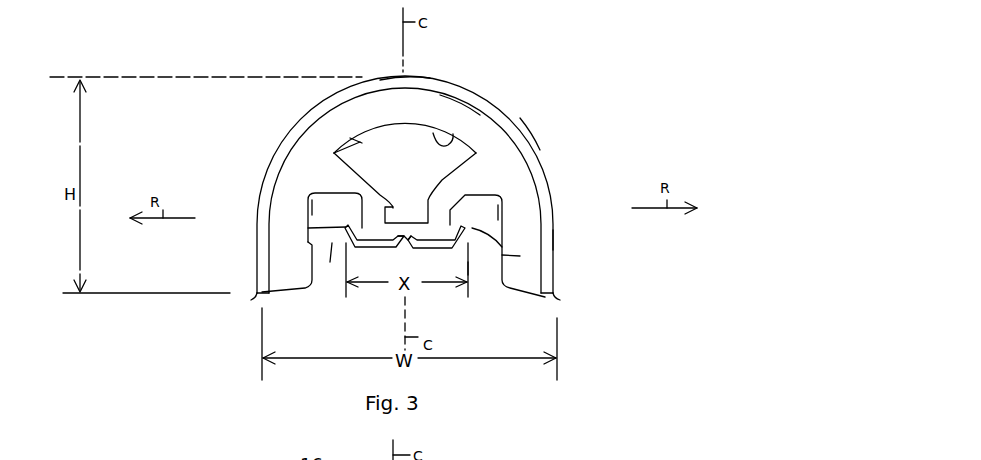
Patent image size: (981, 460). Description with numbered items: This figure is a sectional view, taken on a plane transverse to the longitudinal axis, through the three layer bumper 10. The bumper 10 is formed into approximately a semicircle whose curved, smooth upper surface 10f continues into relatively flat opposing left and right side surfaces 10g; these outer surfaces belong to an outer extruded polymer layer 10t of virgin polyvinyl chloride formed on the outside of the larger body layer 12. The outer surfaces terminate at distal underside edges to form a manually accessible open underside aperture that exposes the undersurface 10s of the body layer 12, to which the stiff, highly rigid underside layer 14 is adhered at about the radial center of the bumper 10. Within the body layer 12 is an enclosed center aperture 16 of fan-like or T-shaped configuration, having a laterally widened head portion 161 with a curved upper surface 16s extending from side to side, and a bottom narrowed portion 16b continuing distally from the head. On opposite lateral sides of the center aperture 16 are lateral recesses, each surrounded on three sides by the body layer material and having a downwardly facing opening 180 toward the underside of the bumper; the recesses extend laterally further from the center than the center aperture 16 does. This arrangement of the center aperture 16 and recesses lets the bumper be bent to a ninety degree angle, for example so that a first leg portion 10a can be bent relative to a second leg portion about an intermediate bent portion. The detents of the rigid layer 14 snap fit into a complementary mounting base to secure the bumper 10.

The bumper 10 is at (512, 64).
The outer extruded polymer layer 10t is at (450, 83).
The body layer 12 is at (460, 115).
The upper outer surface 10f is at (533, 138).
The side surface 10g is at (554, 241).
The center aperture 16 is at (410, 166).
The curved upper surface of center aperture 16s is at (447, 147).
The bottom narrowed portion 16b is at (360, 141).
The head portion 161 is at (364, 142).
The rigid underside layer 14 is at (432, 221).
The undersurface of body layer 10s is at (408, 250).
The first leg portion 10a is at (486, 272).
The recess opening 180 is at (332, 243).